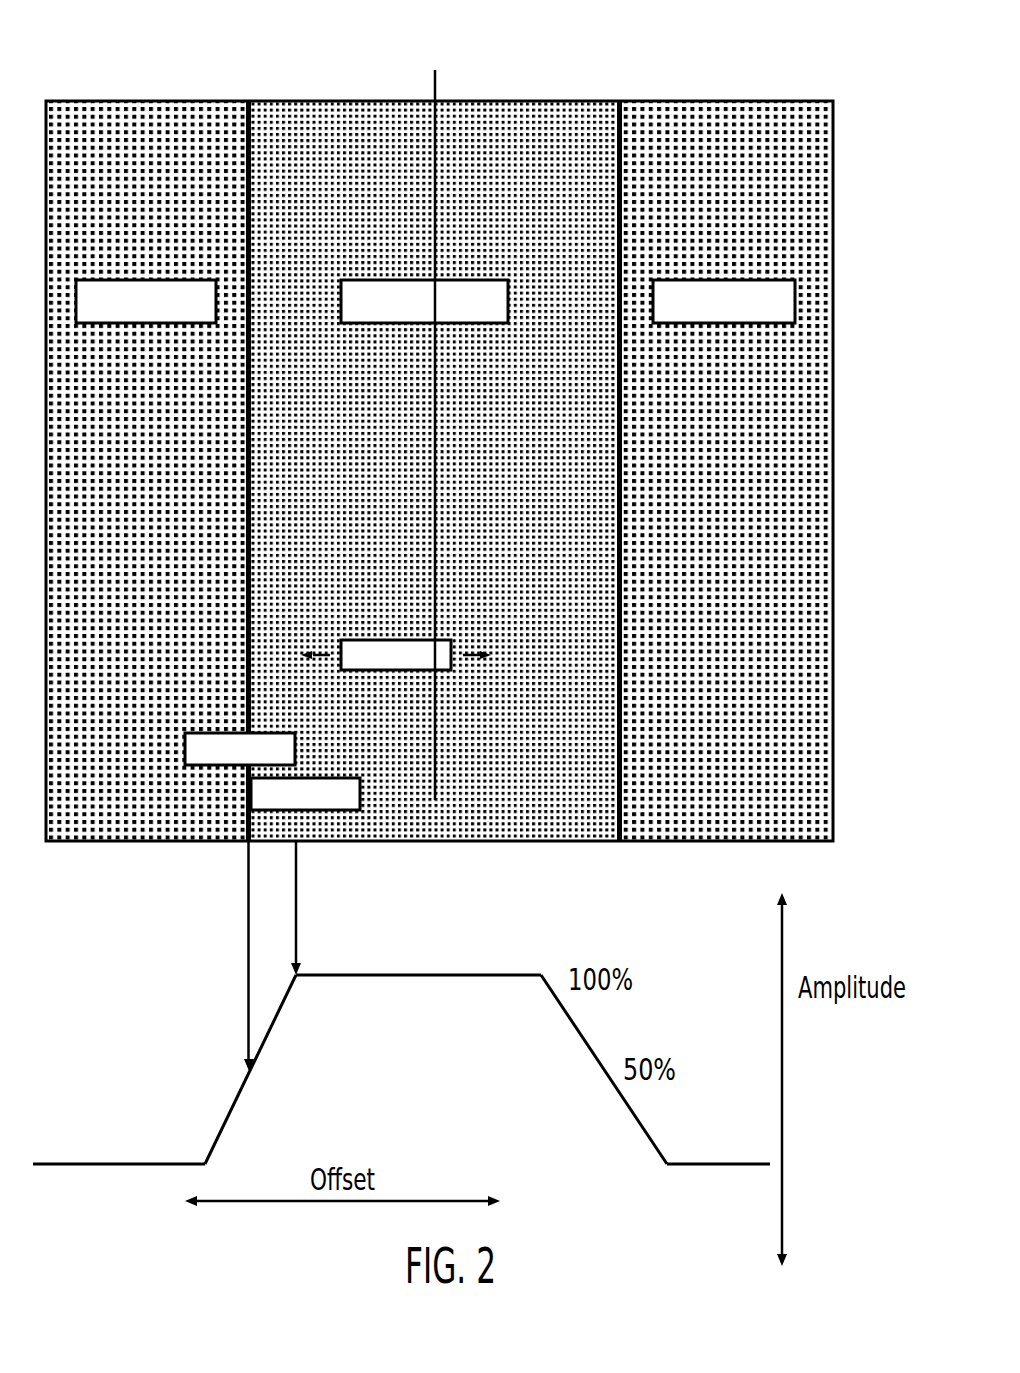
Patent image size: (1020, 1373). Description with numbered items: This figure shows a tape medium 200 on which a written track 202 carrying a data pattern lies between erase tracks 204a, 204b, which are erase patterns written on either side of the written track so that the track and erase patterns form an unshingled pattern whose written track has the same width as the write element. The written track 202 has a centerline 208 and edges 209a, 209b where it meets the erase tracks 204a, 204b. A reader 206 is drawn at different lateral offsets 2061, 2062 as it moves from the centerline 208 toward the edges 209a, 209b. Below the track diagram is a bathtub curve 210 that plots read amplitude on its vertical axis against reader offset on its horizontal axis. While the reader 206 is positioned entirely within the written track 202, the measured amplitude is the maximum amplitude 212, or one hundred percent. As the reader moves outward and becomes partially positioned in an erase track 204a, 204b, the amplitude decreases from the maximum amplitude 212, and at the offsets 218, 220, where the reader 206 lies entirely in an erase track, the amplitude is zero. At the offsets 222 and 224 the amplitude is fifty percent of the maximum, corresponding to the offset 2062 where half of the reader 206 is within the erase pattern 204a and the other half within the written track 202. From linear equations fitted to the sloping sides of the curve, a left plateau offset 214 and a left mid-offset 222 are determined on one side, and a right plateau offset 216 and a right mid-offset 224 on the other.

The tape medium 200 is at (745, 93).
The written track 202 is at (532, 93).
The erase track 204a is at (142, 93).
The erase track 204b is at (680, 93).
The reader 206 is at (364, 632).
The reader offset position 2061 is at (340, 770).
The reader offset position 2062 is at (267, 725).
The centerline 208 is at (427, 63).
The edge of written track 209a is at (240, 93).
The edge of written track 209b is at (612, 93).
The bathtub curve 210 is at (531, 937).
The maximum amplitude 212 is at (456, 966).
The left plateau offset 214 is at (292, 966).
The right plateau offset 216 is at (532, 972).
The offset at zero amplitude 218 is at (196, 1152).
The offset at zero amplitude 220 is at (660, 1152).
The left mid-offset 222 is at (258, 1032).
The right mid-offset 224 is at (578, 1033).